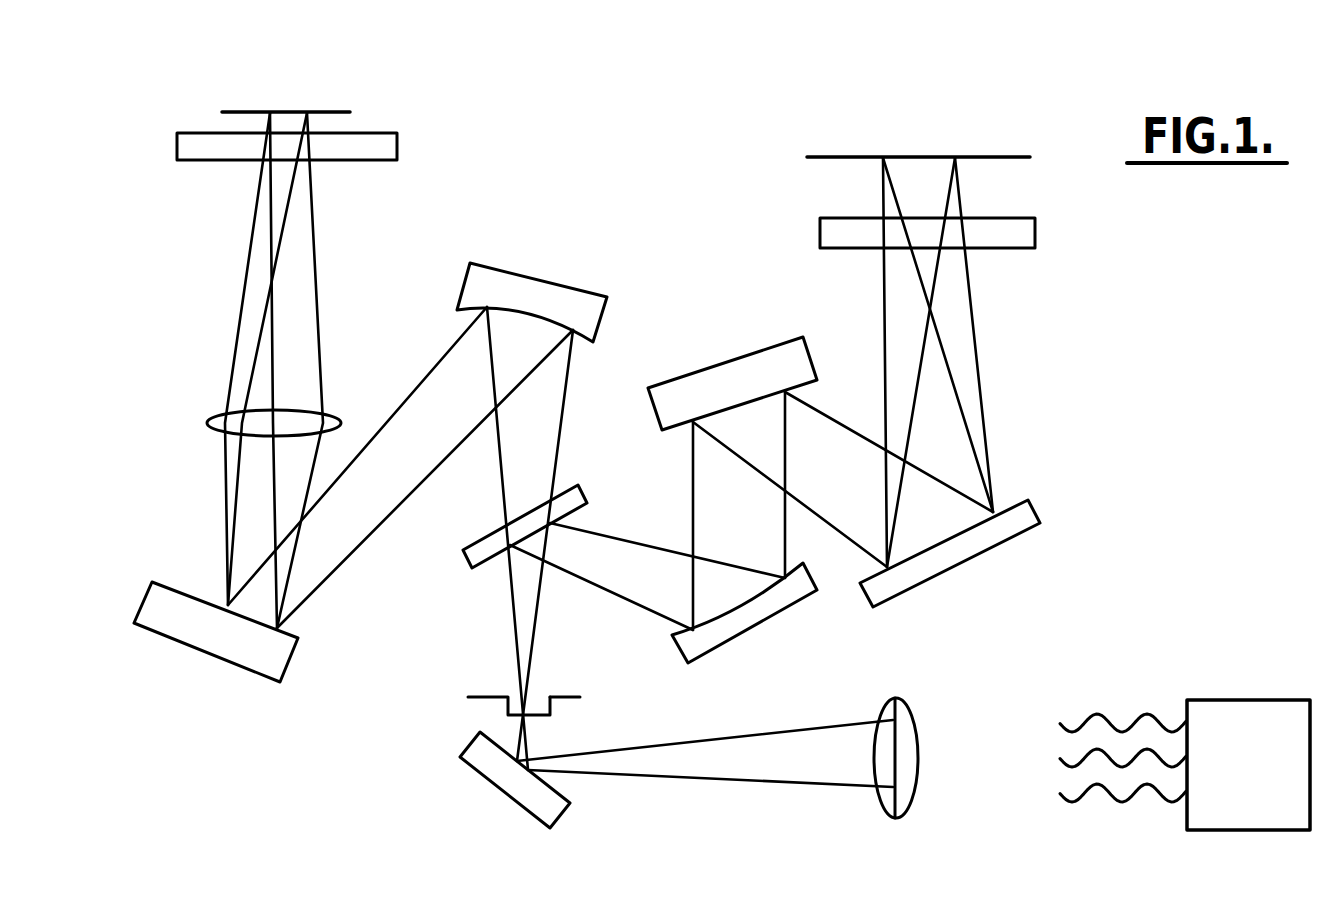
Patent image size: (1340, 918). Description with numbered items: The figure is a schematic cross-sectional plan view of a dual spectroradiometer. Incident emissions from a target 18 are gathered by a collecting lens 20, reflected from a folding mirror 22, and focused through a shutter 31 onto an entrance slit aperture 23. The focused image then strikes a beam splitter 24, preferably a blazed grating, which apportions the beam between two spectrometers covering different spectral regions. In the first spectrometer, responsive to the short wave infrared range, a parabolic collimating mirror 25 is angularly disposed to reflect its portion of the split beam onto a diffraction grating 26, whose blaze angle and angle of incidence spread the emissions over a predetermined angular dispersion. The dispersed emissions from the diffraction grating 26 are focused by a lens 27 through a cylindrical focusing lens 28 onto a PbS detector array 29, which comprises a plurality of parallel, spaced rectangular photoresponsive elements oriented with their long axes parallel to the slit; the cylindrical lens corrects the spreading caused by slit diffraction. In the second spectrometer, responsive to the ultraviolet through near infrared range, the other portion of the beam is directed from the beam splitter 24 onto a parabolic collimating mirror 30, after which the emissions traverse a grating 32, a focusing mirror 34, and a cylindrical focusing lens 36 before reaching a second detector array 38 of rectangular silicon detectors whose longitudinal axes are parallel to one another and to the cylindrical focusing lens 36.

The target 18 is at (1240, 700).
The collecting lens 20 is at (917, 800).
The folding mirror 22 is at (487, 782).
The entrance slit aperture 23 is at (470, 697).
The beam splitter 24 is at (465, 556).
The parabolic collimating mirror 25 is at (547, 282).
The diffraction grating 26 is at (192, 648).
The lens 27 is at (207, 423).
The cylindrical focusing lens 28 is at (240, 160).
The PbS detector array 29 is at (338, 111).
The parabolic collimating mirror 30 is at (792, 612).
The shutter 31 is at (556, 706).
The grating 32 is at (728, 361).
The focusing mirror 34 is at (1020, 528).
The cylindrical focusing lens 36 is at (1035, 232).
The second detector array 38 is at (918, 156).